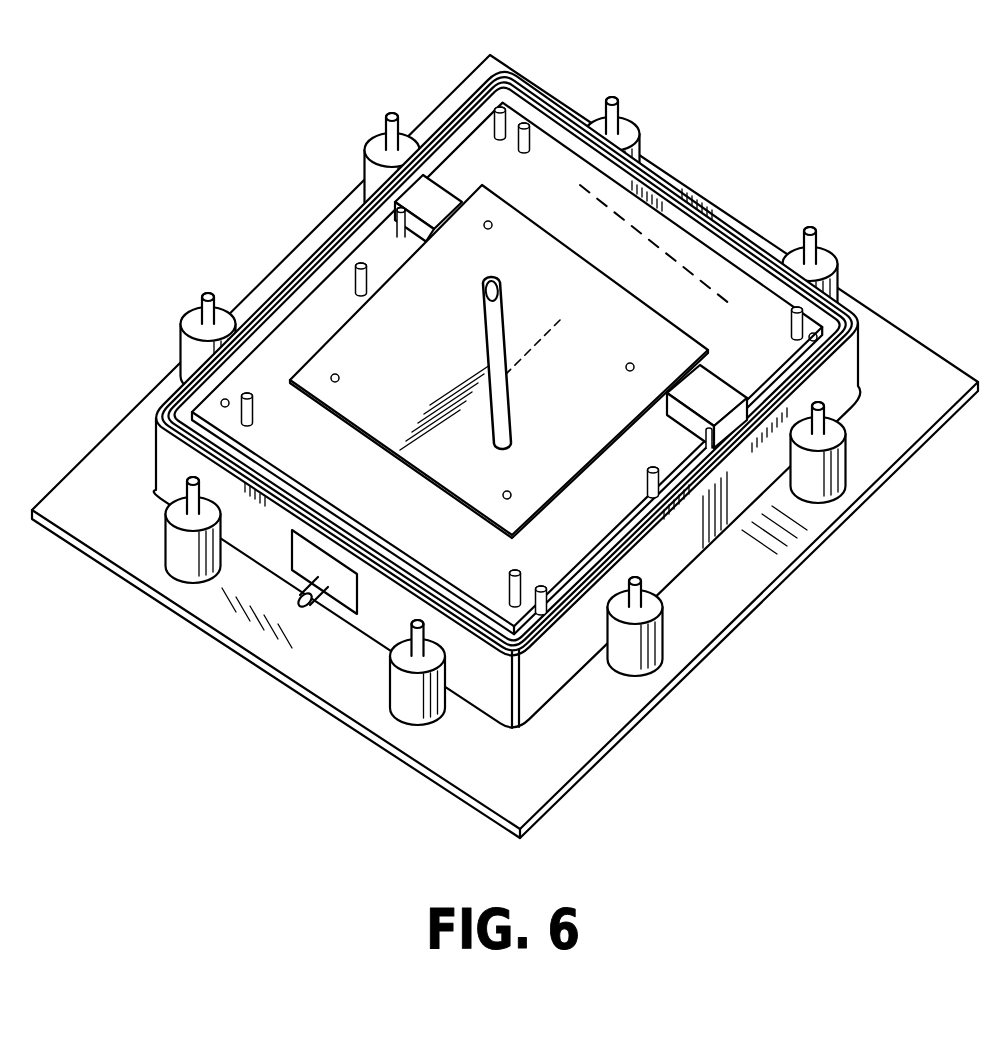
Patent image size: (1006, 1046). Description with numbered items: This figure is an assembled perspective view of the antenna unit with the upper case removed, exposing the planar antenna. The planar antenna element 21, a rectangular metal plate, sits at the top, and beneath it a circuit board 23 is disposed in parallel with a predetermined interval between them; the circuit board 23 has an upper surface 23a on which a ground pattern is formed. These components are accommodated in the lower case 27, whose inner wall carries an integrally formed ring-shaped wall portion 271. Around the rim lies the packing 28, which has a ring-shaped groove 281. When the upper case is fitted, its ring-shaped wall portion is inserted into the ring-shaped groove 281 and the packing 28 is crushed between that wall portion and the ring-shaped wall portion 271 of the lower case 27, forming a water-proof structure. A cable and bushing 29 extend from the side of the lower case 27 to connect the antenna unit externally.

The planar antenna element 21 is at (368, 352).
The circuit board 23 is at (670, 173).
The upper surface 23a is at (680, 257).
The lower case 27 is at (613, 743).
The ring-shaped wall portion 271 is at (692, 538).
The packing 28 is at (846, 298).
The ring-shaped groove 281 is at (718, 467).
The cable and bushing 29 is at (300, 600).